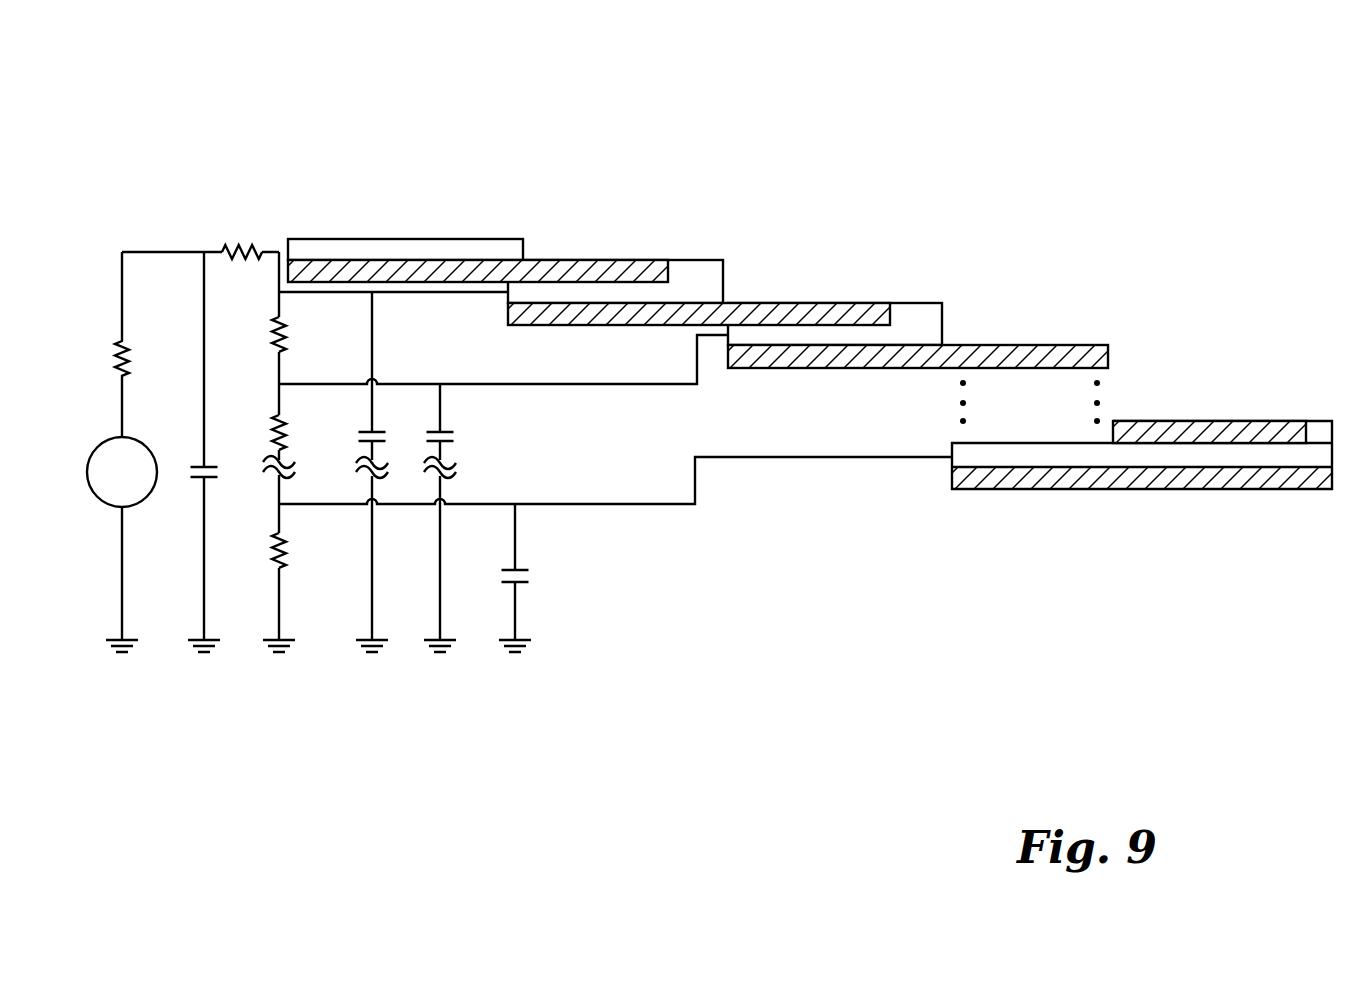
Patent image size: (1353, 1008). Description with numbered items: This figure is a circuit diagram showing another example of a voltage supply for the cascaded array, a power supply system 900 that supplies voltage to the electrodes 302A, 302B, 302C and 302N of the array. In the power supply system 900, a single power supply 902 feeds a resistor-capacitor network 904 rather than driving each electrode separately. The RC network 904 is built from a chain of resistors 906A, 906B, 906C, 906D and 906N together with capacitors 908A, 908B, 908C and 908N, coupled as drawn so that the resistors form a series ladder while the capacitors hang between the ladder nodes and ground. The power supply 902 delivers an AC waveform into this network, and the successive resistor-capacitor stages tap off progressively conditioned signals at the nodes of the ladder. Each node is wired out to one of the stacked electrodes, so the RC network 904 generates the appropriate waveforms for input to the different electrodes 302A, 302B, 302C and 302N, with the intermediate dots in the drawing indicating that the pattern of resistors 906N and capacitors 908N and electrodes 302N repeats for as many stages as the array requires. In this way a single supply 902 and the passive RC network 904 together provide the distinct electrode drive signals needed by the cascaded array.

The power supply system 900 is at (1168, 102).
The power supply 902 is at (110, 483).
The resistor-capacitor (RC) network 904 is at (562, 725).
The resistor 906A is at (112, 333).
The resistor 906B is at (272, 220).
The resistor 906C is at (283, 335).
The resistor 906D is at (268, 425).
The resistor 906N is at (257, 570).
The capacitor 908A is at (177, 513).
The capacitor 908B is at (330, 463).
The capacitor 908C is at (500, 433).
The capacitor 908N is at (570, 558).
The electrode 302A is at (523, 240).
The electrode 302B is at (722, 260).
The electrode 302C is at (942, 303).
The electrode 302N is at (1318, 421).